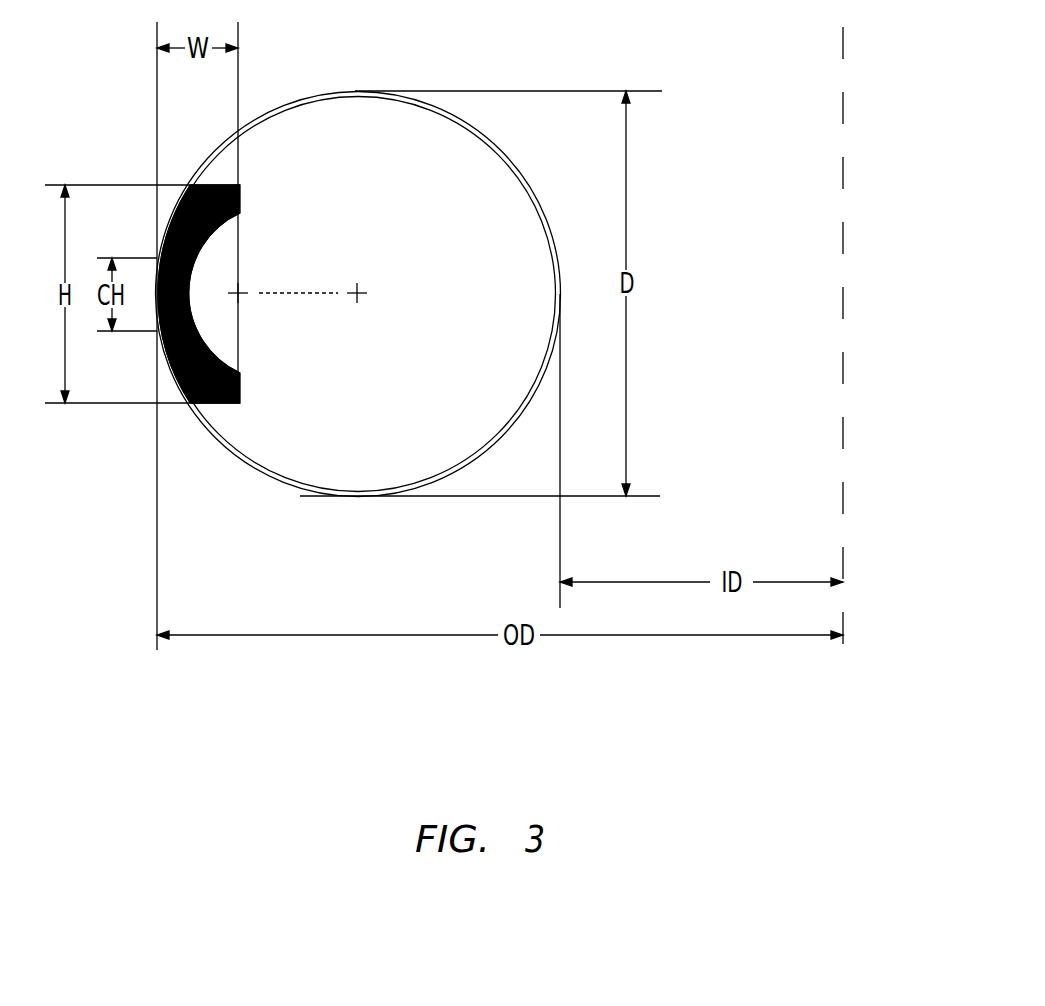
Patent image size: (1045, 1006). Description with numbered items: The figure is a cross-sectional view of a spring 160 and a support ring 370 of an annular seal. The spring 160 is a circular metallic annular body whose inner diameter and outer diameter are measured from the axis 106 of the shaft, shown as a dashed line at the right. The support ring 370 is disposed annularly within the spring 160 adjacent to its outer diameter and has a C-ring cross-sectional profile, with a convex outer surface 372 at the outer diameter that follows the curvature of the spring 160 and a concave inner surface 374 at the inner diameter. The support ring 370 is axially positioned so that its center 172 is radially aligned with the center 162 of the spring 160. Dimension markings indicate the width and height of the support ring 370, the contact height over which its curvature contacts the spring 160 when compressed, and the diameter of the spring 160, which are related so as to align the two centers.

The axis 106 is at (843, 107).
The spring 160 is at (492, 138).
The center of the spring 162 is at (358, 290).
The center of the support ring 172 is at (238, 290).
The support ring 370 is at (218, 367).
The convex outer surface 372 is at (202, 198).
The concave inner surface 374 is at (212, 230).